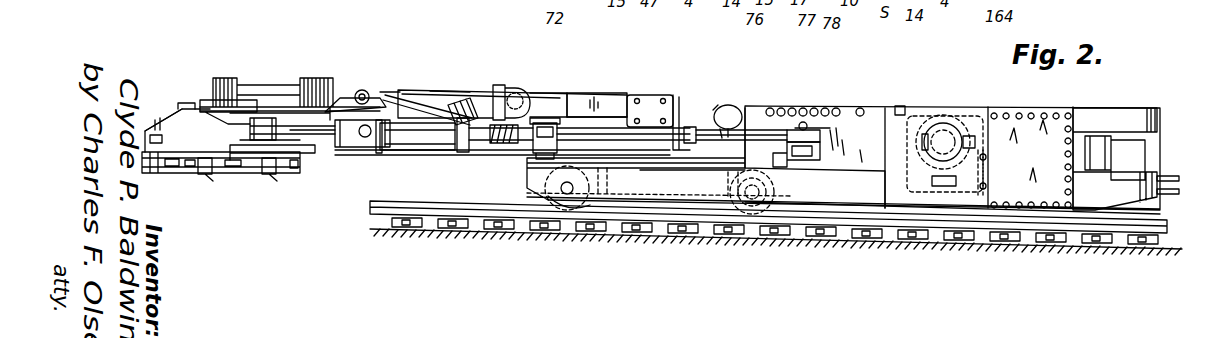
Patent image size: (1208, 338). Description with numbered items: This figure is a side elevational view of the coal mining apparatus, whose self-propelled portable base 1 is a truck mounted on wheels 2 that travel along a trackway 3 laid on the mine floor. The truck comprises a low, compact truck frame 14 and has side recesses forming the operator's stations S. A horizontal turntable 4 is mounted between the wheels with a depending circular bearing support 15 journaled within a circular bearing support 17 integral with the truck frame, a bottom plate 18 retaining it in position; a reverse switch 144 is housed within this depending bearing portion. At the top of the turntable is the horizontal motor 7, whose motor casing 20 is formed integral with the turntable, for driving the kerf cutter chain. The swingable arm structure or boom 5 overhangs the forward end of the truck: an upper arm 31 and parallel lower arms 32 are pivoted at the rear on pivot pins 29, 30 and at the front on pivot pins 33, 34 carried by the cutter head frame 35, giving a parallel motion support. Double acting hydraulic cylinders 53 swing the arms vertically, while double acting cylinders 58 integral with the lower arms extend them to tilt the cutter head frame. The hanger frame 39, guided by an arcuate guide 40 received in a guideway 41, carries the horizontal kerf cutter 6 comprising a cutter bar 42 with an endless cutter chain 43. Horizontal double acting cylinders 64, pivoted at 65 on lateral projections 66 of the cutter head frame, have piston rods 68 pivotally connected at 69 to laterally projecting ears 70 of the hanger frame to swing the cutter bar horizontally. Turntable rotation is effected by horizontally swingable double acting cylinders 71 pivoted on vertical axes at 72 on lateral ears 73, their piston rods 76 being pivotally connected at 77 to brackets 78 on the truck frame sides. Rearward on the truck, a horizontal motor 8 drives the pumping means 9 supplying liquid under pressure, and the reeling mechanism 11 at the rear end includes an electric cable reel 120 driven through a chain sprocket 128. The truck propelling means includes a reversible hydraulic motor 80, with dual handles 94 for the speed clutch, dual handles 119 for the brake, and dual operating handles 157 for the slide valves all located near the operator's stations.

The self-propelled portable base 1 is at (858, 164).
The wheels 2 is at (555, 196).
The trackway 3 is at (447, 206).
The horizontal turntable 4 is at (658, 170).
The swingable arm structure or boom 5 is at (512, 87).
The horizontal kerf cutter 6 is at (190, 190).
The horizontal motor 7 is at (609, 96).
The horizontal motor 8 is at (922, 120).
The pumping means 9 is at (961, 131).
The reeling mechanism 11 is at (1113, 135).
The truck frame 14 is at (884, 200).
The depending circular bearing support 15 is at (686, 207).
The circular bearing support 17 is at (585, 220).
The bottom plate 18 is at (661, 220).
The motor casing 20 is at (633, 98).
The pivot pins 29 is at (521, 91).
The pivot pins 30 is at (508, 147).
The upper arm 31 is at (447, 92).
The lower arms 32 is at (461, 153).
The pivot pins 33 is at (364, 90).
The pivot pins 34 is at (353, 151).
The cutter head frame 35 is at (302, 97).
The hanger frame 39 is at (176, 111).
The arcuate guide 40 is at (228, 108).
The guideway 41 is at (206, 101).
The cutter bar 42 is at (197, 104).
The endless cutter chain 43 is at (241, 180).
The double acting hydraulic cylinders 53 is at (470, 112).
The double acting cylinders 58 is at (415, 159).
The horizontal double acting cylinders 64 is at (437, 148).
The pivotal mounting 65 is at (383, 100).
The lateral projections 66 is at (335, 107).
The piston rods 68 is at (302, 156).
The pivotal connection 69 is at (263, 118).
The laterally projecting ears 70 is at (246, 130).
The horizontally swingable double acting cylinders 71 is at (571, 127).
The vertical pivot axes 72 is at (554, 102).
The lateral ears 73 is at (545, 120).
The piston rods 76 is at (752, 142).
The pivotal connection 77 is at (821, 132).
The brackets 78 is at (821, 147).
The reversible hydraulic motor 80 is at (735, 105).
The dual handles 94 is at (746, 129).
The dual handles 119 is at (808, 126).
The electric cable reel 120 is at (1122, 160).
The chain sprocket 128 is at (723, 97).
The reverse switch 144 is at (692, 134).
The dual operating handles 157 is at (813, 108).
The operator's stations S is at (896, 197).